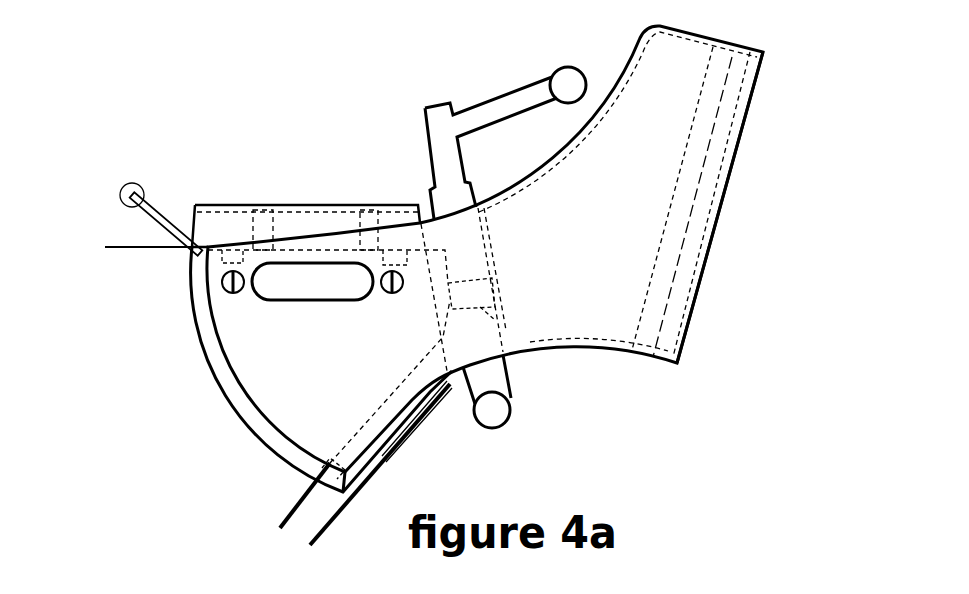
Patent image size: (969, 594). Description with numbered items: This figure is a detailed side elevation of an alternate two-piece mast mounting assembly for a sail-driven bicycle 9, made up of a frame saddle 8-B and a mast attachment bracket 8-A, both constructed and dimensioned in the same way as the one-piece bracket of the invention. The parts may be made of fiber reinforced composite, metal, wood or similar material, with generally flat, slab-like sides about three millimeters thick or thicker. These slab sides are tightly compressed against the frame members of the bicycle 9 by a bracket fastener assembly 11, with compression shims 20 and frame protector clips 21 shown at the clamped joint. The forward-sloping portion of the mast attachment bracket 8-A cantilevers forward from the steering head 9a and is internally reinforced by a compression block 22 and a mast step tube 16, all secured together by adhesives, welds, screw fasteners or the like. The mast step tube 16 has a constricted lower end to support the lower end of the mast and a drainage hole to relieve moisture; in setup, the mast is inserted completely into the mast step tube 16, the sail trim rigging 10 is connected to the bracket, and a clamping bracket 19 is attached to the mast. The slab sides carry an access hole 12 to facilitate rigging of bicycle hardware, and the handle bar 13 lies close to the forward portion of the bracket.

The mast attachment bracket 8-A is at (608, 232).
The frame saddle 8-B is at (285, 203).
The bicycle 9 is at (193, 212).
The steering head 9a is at (433, 185).
The sail trim rigging 10 is at (172, 233).
The bracket fastener assembly 11 is at (223, 288).
The access hole 12 is at (273, 300).
The handle bar 13 is at (550, 78).
The mast step tube 16 is at (688, 323).
The clamping bracket 19 is at (231, 293).
The compression shims 20 is at (223, 255).
The frame protector clips 21 is at (407, 438).
The compression block 22 is at (733, 57).